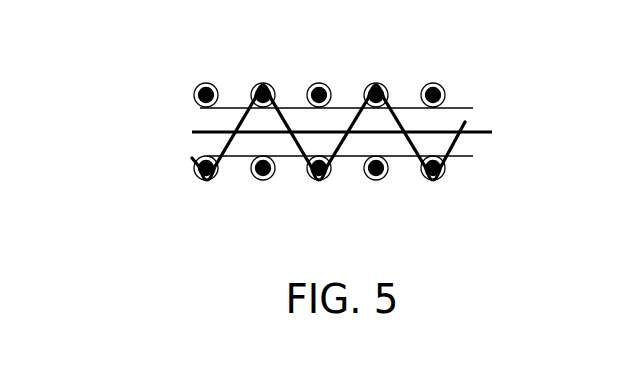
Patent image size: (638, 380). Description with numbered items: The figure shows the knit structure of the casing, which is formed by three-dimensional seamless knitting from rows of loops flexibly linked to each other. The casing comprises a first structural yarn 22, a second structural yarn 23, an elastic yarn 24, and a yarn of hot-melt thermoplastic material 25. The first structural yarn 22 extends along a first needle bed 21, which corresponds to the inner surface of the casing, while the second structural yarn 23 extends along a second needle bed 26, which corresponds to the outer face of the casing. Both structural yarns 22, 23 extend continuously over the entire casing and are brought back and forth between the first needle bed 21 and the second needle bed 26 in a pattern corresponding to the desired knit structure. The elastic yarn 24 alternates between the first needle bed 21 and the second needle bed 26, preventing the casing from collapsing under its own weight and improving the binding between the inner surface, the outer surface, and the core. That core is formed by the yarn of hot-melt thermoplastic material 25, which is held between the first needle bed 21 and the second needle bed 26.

The first needle bed 21 is at (175, 92).
The first structural yarn 22 is at (463, 105).
The second structural yarn 23 is at (463, 157).
The elastic yarn 24 is at (432, 182).
The yarn of hot-melt thermoplastic material 25 is at (487, 135).
The second needle bed 26 is at (175, 162).